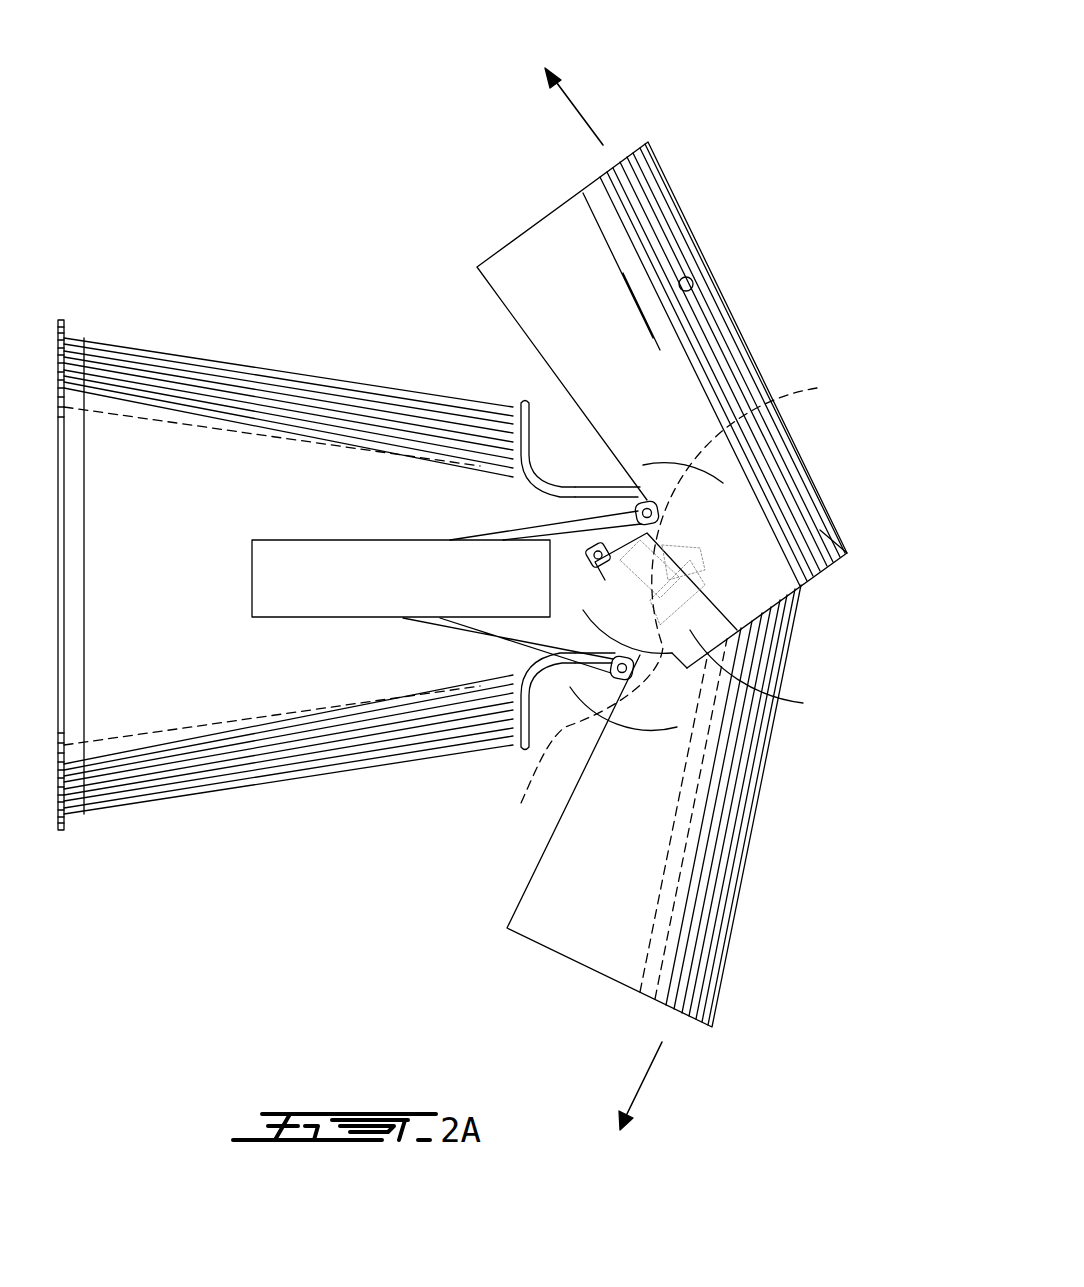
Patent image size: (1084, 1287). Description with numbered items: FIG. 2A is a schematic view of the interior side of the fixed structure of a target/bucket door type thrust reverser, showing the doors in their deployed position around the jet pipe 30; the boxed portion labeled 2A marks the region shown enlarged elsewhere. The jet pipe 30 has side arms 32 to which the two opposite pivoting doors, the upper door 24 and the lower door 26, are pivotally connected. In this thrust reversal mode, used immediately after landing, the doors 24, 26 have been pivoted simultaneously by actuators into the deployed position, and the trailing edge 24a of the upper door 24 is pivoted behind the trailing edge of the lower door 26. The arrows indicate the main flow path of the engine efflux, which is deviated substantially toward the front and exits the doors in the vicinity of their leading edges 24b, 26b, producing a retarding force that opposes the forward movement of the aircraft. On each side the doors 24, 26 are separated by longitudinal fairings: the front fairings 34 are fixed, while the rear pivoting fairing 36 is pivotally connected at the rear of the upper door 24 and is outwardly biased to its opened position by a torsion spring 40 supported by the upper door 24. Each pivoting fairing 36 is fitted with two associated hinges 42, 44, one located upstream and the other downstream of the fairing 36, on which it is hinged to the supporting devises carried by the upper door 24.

The upper door 24 is at (653, 220).
The trailing edge 24a is at (848, 554).
The leading edge 24b is at (645, 144).
The lower door 26 is at (723, 872).
The leading edge 26b is at (698, 1027).
The jet pipe 30 is at (158, 445).
The side arms 32 is at (553, 535).
The front fairings 34 is at (327, 578).
The pivoting fairing 36 is at (797, 707).
The torsion spring 40 is at (678, 582).
The hinge 42 is at (553, 513).
The hinge 44 is at (519, 724).
The view direction indicator 2A is at (677, 730).